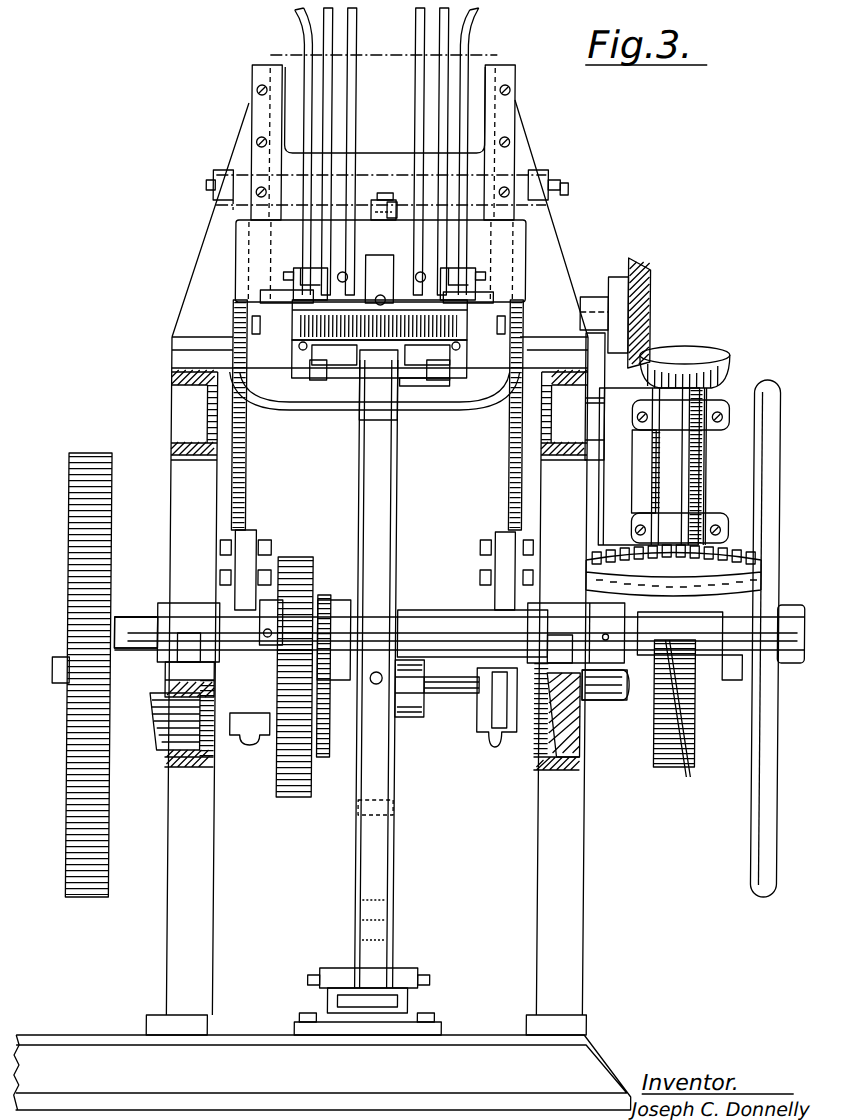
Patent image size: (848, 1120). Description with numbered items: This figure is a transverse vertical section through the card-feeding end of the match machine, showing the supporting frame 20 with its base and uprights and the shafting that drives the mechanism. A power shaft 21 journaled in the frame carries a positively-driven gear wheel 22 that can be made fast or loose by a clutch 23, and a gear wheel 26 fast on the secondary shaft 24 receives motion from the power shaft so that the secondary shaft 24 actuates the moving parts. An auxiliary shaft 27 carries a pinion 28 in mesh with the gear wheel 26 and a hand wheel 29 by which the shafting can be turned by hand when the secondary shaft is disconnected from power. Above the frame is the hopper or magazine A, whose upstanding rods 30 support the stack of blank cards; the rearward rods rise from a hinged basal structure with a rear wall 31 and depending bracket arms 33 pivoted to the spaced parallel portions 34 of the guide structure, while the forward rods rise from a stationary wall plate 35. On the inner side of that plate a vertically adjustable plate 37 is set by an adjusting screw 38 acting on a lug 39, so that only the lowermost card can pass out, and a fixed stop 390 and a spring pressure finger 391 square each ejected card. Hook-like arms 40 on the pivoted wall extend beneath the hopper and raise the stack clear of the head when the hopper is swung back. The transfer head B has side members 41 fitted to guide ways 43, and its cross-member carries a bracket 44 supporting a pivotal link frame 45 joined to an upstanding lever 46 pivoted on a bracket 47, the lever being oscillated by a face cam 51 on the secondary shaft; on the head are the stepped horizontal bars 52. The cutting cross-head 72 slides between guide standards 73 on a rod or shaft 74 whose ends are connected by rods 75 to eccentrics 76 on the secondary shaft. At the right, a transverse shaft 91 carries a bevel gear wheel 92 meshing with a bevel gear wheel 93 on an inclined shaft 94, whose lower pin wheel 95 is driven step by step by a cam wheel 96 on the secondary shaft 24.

The hopper or magazine A is at (382, 151).
The transfer head B is at (366, 350).
The supporting frame 20 is at (168, 953).
The power shaft 21 is at (57, 658).
The gear wheel 22 is at (98, 898).
The clutch 23 is at (336, 758).
The secondary shaft 24 is at (143, 682).
The gear wheel 26 is at (284, 798).
The auxiliary shaft 27 is at (133, 616).
The pinion 28 is at (292, 558).
The hand wheel 29 is at (755, 866).
The upstanding rods 30 is at (348, 90).
The rear wall 31 is at (399, 270).
The depending bracket arms 33 is at (253, 318).
The spaced parallel portions 34 is at (290, 392).
The stationary wall plate 35 is at (240, 228).
The vertically adjustable plate 37 is at (378, 198).
The adjusting screw 38 is at (384, 194).
The lug 39 is at (393, 205).
The hook-like arms 40 is at (332, 288).
The side members 41 is at (262, 345).
The guide ways 43 is at (253, 326).
The bracket 44 is at (318, 382).
The pivotal link frame 45 is at (407, 388).
The upstanding lever 46 is at (398, 893).
The bracket 47 is at (425, 970).
The face cam 51 is at (355, 808).
The horizontal bars 52 is at (372, 355).
The cross-head 72 is at (467, 152).
The guide standards 73 is at (215, 250).
The rod or shaft 74 is at (487, 167).
The rods 75 is at (250, 466).
The eccentrics 76 is at (262, 748).
The transverse shaft 91 is at (652, 305).
The bevel gear wheel 92 is at (655, 275).
The bevel gear wheel 93 is at (725, 347).
The inclined shaft 94 is at (680, 350).
The pin wheel 95 is at (715, 548).
The cam wheel 96 is at (675, 770).
The fixed stop 390 is at (478, 300).
The spring pressure finger 391 is at (275, 293).